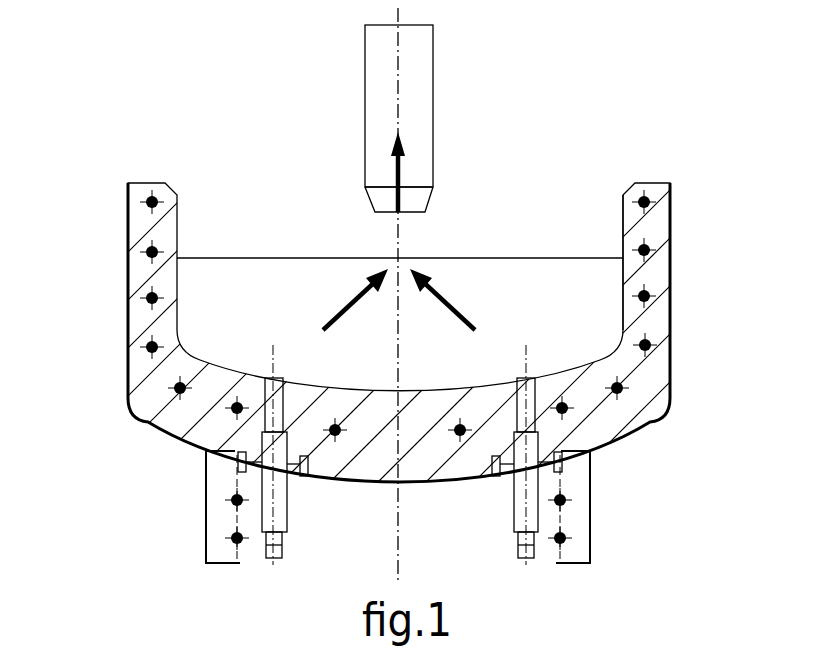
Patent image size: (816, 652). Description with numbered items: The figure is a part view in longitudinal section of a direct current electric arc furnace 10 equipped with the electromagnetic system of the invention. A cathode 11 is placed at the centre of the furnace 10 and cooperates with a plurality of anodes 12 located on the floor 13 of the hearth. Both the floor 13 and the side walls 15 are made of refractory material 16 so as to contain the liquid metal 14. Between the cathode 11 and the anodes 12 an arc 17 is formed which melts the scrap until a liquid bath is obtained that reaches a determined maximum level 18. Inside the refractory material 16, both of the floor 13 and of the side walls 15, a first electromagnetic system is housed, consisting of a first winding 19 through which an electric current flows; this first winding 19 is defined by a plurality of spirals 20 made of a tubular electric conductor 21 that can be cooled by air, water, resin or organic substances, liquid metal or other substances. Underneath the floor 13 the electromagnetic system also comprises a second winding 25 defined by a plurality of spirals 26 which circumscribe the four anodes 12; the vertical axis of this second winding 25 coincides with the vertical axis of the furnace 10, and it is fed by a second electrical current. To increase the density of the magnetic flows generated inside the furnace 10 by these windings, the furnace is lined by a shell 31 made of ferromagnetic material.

The electric arc furnace 10 is at (232, 70).
The cathode 11 is at (383, 62).
The anodes 12 is at (528, 410).
The floor 13 is at (417, 486).
The liquid metal 14 is at (505, 293).
The side walls 15 is at (678, 258).
The refractory material 16 is at (633, 238).
The arc 17 is at (364, 289).
The maximum level 18 is at (257, 254).
The first winding 19 is at (152, 186).
The spirals 20 is at (144, 252).
The tubular electric conductor 21 is at (190, 392).
The second winding 25 is at (237, 566).
The spirals 26 is at (230, 499).
The shell 31 is at (674, 232).